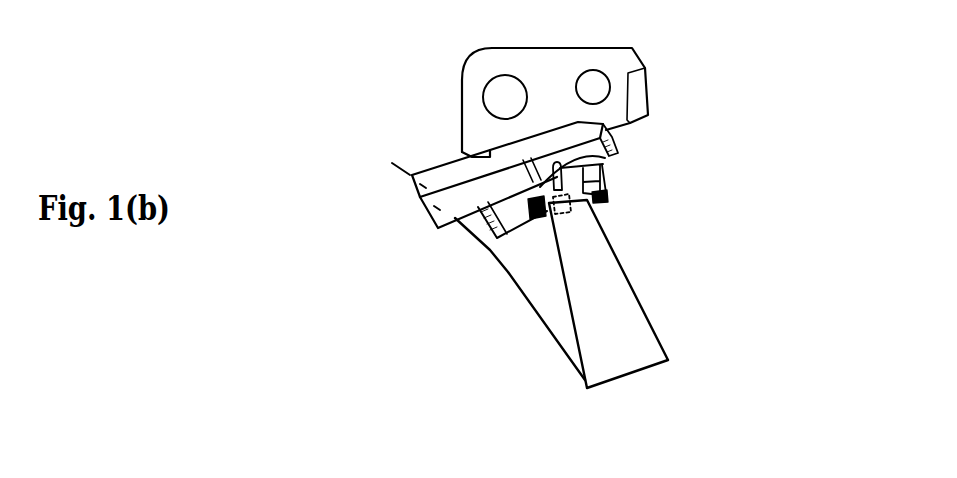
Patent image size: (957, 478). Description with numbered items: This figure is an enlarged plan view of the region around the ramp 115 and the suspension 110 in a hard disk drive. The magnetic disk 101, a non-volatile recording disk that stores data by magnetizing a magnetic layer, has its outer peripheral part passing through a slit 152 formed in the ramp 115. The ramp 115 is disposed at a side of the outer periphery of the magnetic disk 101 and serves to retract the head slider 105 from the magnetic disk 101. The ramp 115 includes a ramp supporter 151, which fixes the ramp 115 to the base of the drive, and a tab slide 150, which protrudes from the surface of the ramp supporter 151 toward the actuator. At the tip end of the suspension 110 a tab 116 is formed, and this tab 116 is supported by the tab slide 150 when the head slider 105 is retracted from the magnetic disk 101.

The magnetic disk 101 is at (547, 290).
The head slider 105 is at (587, 210).
The suspension 110 is at (643, 302).
The ramp 115 is at (670, 53).
The tab 116 is at (603, 155).
The tab slide 150 is at (427, 212).
The ramp supporter 151 is at (463, 72).
The slit 152 is at (413, 190).